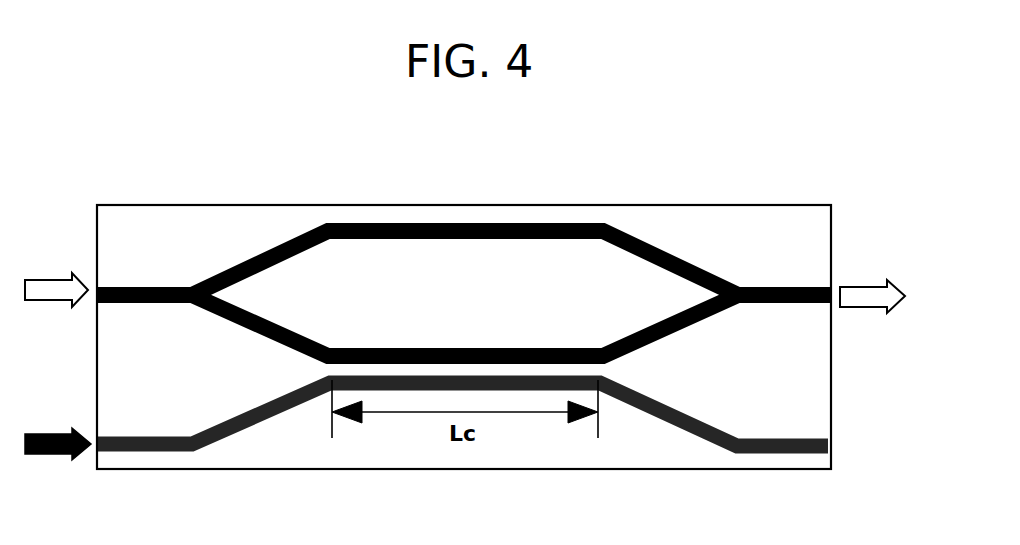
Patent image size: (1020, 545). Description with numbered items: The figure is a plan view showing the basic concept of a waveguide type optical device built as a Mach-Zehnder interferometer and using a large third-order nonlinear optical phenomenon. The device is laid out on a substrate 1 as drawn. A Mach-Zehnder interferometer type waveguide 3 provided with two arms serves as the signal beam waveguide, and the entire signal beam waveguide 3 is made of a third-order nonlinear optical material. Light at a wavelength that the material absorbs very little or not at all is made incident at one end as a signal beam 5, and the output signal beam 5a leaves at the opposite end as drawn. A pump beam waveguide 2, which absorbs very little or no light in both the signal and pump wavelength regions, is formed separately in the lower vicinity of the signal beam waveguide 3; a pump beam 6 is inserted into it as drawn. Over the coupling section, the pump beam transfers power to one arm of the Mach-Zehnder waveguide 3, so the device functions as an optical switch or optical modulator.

The substrate 1 is at (150, 223).
The pump beam waveguide 2 is at (262, 410).
The signal beam waveguide 3 is at (263, 256).
The signal beam 5 is at (56, 279).
The output signal light 5a is at (872, 313).
The control light input 6 is at (58, 433).